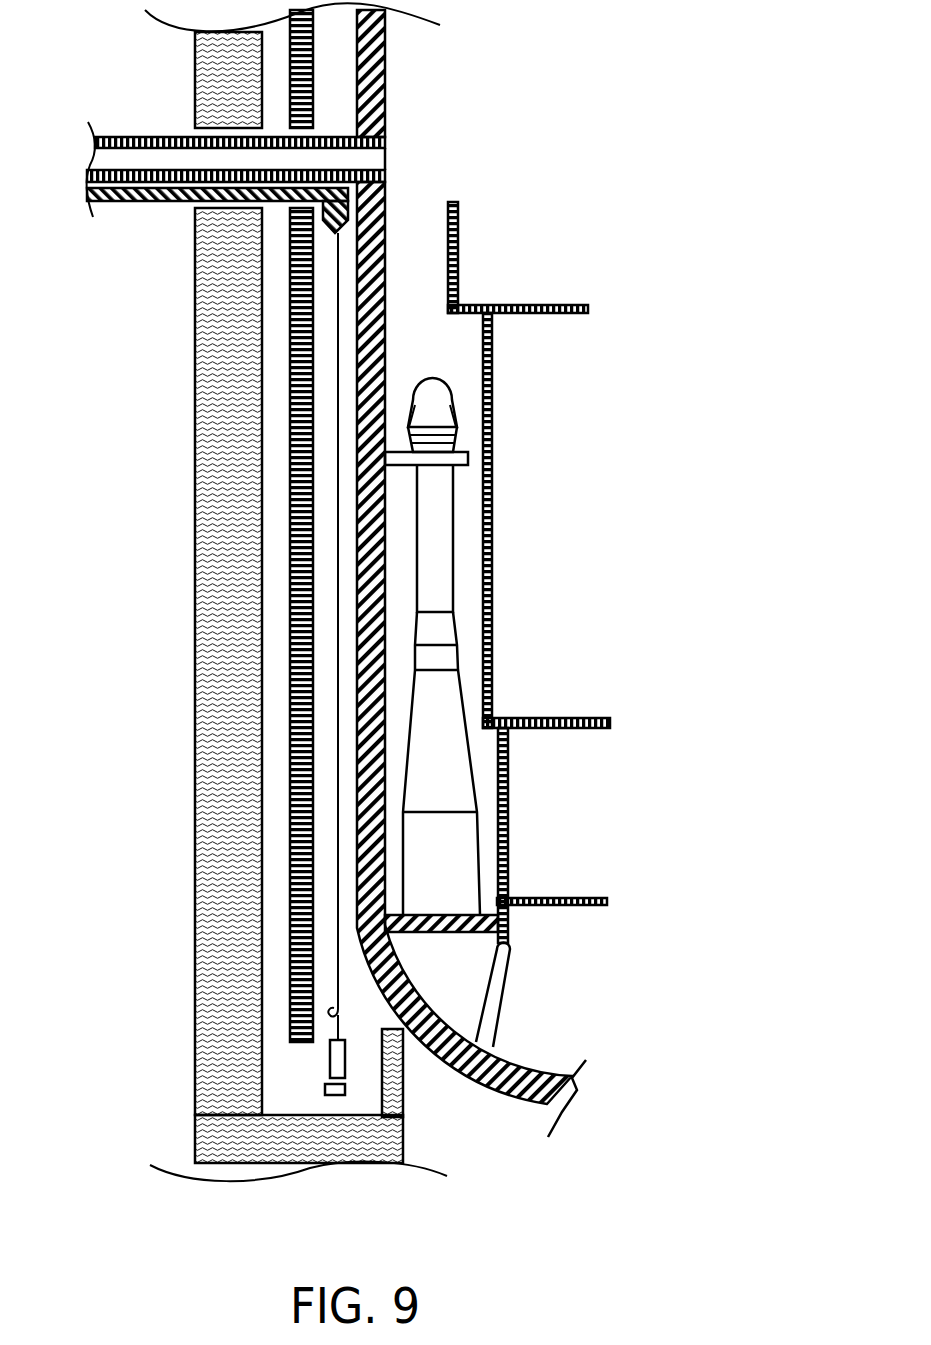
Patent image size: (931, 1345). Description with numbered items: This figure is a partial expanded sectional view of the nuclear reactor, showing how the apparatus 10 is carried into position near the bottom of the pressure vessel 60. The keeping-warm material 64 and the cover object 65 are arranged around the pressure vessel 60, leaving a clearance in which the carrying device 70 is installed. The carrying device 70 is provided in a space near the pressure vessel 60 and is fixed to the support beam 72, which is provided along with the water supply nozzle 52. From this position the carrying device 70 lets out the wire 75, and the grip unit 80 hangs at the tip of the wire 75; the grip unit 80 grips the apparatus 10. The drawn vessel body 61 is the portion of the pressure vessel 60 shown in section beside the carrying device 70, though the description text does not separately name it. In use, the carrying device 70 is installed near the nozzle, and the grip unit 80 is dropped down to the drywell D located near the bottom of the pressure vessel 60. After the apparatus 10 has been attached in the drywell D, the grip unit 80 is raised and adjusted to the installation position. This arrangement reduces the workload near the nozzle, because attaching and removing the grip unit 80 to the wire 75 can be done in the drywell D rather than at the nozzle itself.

The apparatus 10 is at (325, 1088).
The water supply nozzle 52 is at (158, 137).
The pressure vessel 60 is at (294, 646).
The vessel body 61 is at (407, 745).
The keeping-warm material 64 is at (290, 637).
The cover object 65 is at (199, 549).
The carrying device 70 is at (385, 206).
The support beam 72 is at (152, 202).
The wire 75 is at (338, 942).
The grip unit 80 is at (330, 1059).
The drywell D is at (363, 1098).